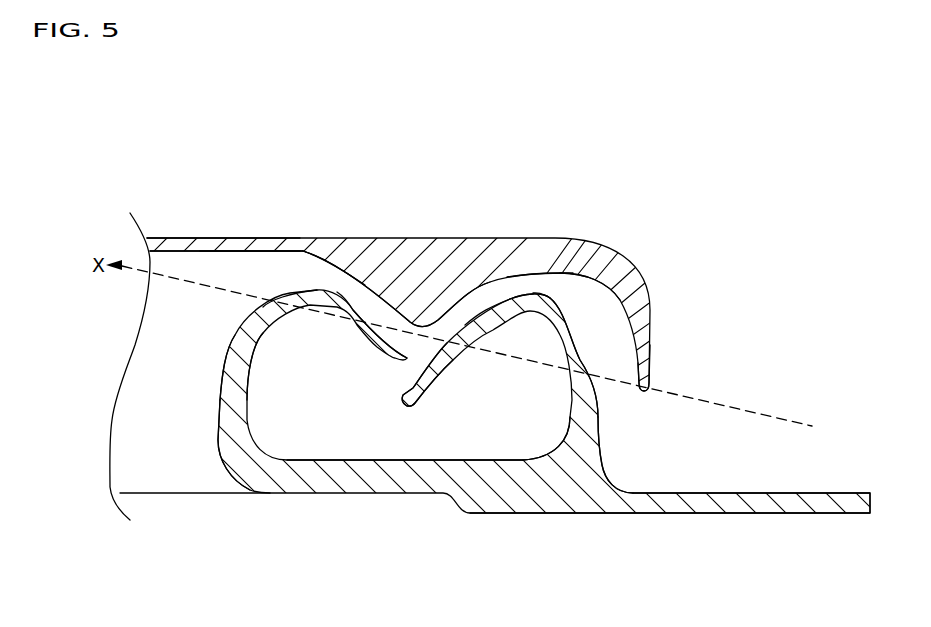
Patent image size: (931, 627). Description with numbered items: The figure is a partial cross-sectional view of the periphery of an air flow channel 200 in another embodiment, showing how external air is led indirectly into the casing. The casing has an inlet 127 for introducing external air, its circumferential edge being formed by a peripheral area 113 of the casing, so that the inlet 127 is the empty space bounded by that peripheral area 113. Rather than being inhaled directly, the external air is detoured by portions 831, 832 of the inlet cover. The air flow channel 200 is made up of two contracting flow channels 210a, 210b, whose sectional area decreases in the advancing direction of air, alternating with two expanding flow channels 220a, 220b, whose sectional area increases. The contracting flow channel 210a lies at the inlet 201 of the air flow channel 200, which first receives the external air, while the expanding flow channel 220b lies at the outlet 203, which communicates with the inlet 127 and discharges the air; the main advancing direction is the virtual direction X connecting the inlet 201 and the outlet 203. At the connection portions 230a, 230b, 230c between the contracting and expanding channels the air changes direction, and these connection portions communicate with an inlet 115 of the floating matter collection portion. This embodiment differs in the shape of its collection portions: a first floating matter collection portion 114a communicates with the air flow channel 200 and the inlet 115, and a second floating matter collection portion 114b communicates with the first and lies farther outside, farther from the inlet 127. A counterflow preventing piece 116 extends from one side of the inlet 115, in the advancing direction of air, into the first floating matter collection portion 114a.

The peripheral area 113 is at (520, 470).
The first floating matter collection portion 114a is at (303, 417).
The second floating matter collection portion 114b is at (483, 420).
The inlet of the floating matter collection portion 115 is at (428, 373).
The counterflow preventing piece 116 is at (412, 407).
The inlet 127 is at (172, 428).
The air flow channel 200 is at (600, 258).
The inlet of the air flow channel 201 is at (620, 382).
The outlet of the air flow channel 203 is at (215, 337).
The contracting flow channel 210a is at (599, 322).
The contracting flow channel 210b is at (367, 296).
The expanding flow channel 220a is at (547, 294).
The expanding flow channel 220b is at (236, 287).
The connection portion 230a is at (573, 290).
The connection portion 230b is at (482, 294).
The connection portion 230c is at (323, 276).
The portion of the inlet cover 831 is at (210, 245).
The portion of the inlet cover 832 is at (407, 283).